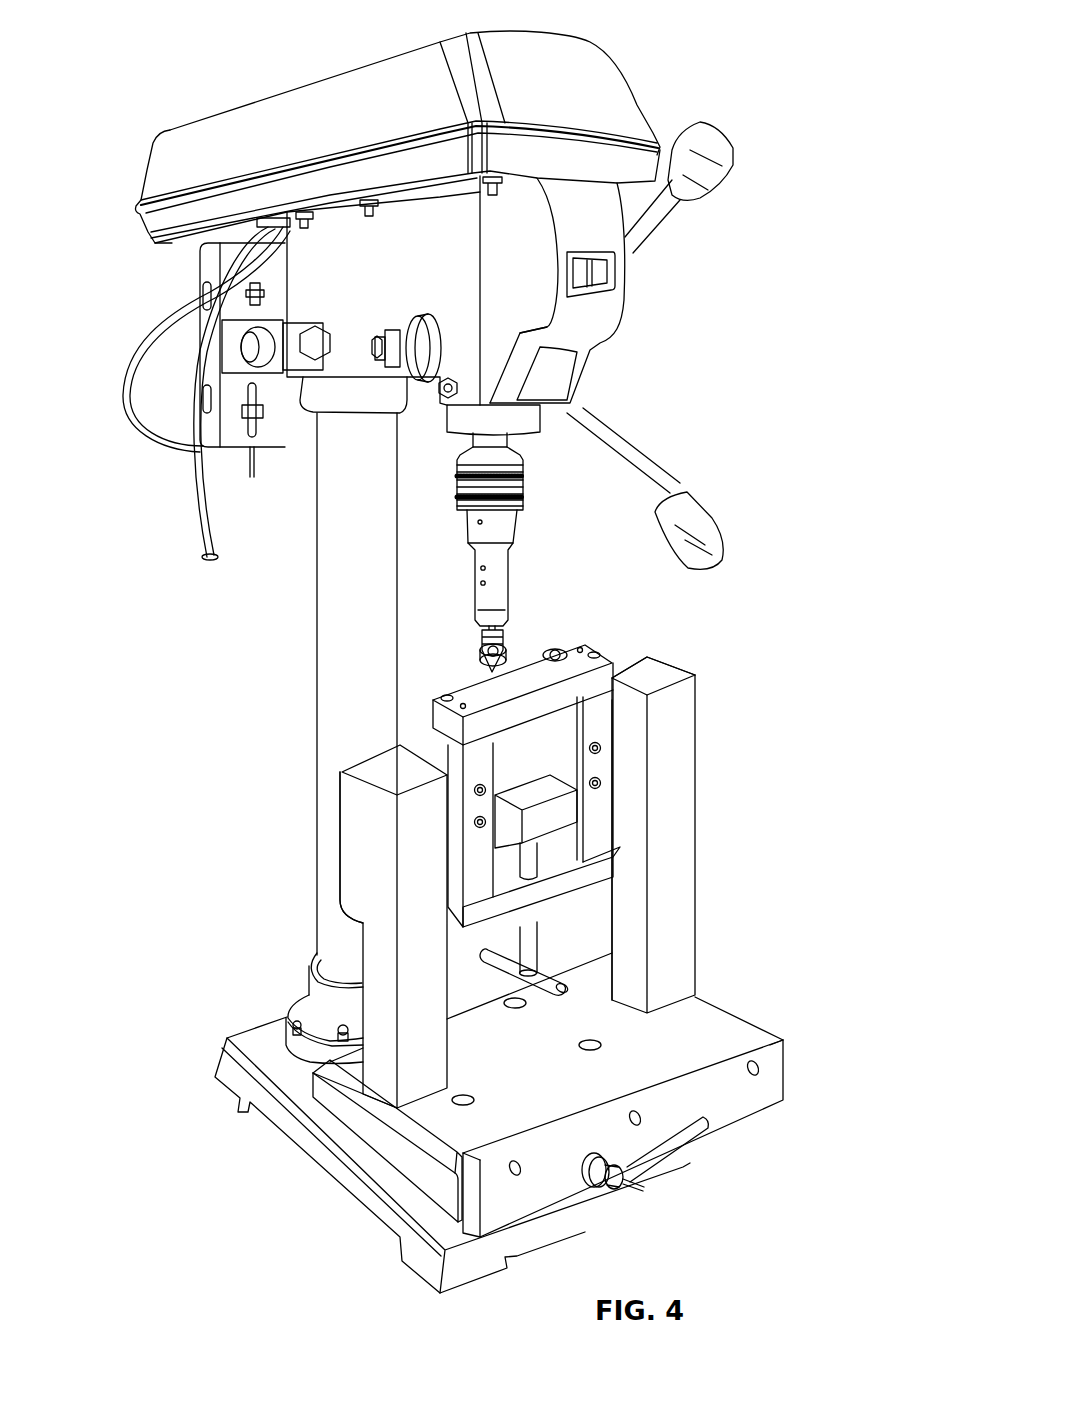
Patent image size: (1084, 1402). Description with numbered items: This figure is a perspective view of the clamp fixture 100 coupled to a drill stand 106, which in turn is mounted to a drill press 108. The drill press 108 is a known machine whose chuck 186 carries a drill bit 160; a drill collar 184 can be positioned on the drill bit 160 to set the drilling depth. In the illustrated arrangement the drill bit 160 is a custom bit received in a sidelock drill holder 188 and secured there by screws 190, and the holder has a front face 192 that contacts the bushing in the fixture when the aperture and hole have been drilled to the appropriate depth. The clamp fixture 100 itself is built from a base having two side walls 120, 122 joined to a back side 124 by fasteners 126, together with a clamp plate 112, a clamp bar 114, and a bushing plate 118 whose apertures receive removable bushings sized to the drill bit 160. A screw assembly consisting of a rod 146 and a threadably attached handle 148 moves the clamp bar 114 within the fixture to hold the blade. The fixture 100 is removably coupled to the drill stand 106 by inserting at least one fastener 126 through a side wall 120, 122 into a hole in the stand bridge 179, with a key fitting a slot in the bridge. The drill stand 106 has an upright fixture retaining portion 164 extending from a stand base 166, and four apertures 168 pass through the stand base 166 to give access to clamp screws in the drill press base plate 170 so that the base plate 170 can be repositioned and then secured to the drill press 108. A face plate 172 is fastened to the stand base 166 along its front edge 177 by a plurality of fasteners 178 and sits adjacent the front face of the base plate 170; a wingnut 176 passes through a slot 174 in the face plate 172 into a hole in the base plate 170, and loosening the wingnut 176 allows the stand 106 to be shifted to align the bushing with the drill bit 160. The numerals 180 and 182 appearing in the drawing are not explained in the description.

The clamp fixture 100 is at (632, 633).
The drill stand 106 is at (307, 837).
The drill press 108 is at (675, 50).
The clamp plate 112 is at (597, 873).
The clamp bar 114 is at (500, 832).
The bushing plate 118 is at (605, 676).
The side wall 120 is at (597, 816).
The side wall 122 is at (477, 867).
The back side 124 is at (548, 762).
The fasteners 126 is at (474, 789).
The rod 146 is at (527, 947).
The handle 148 is at (547, 988).
The drill bit 160 is at (500, 650).
The upright fixture retaining portion 164 is at (215, 770).
The stand base 166 is at (700, 1008).
The apertures 168 is at (514, 999).
The drill press base plate 170 is at (354, 1127).
The face plate 172 is at (760, 1104).
The slot 174 is at (707, 1134).
The wingnut 176 is at (643, 1193).
The front edge 177 is at (760, 1034).
The fasteners 178 is at (758, 1069).
The stand bridge 179 is at (417, 743).
The base plate 180 is at (390, 1235).
The base top surface 182 is at (377, 1185).
The drill collar 184 is at (480, 656).
The chuck 186 is at (523, 488).
The sidelock drill holder 188 is at (505, 573).
The screws 190 is at (481, 567).
The front face 192 is at (515, 620).